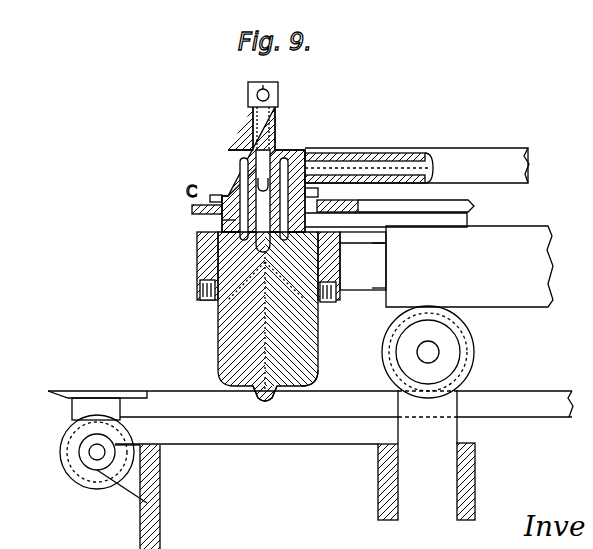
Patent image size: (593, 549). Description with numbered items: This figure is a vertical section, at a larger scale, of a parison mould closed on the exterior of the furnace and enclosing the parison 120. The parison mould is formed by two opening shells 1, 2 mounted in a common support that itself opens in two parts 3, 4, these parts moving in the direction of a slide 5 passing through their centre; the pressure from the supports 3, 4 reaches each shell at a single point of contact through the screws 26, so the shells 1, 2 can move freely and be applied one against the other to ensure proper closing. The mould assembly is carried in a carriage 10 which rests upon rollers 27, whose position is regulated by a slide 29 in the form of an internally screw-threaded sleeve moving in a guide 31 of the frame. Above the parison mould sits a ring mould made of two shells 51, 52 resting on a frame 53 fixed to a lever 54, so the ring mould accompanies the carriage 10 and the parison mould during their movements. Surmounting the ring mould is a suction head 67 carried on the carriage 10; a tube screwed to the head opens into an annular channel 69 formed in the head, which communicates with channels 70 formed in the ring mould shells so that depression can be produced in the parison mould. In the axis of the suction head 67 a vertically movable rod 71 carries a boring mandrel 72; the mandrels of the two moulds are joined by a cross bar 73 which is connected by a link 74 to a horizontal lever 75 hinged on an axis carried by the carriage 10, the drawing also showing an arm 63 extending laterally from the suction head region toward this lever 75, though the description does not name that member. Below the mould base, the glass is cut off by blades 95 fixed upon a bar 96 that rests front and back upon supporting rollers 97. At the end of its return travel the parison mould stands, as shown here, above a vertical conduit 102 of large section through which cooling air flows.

The opening shell 1 is at (228, 376).
The opening shell 2 is at (303, 375).
The support part 3 is at (200, 259).
The support part 4 is at (328, 256).
The slide 5 is at (363, 261).
The carriage 10 is at (462, 266).
The screws 26 is at (201, 294).
The rollers 27 is at (428, 375).
The slide 29 is at (407, 482).
The guide 31 is at (466, 476).
The ring mould shell 51 is at (210, 198).
The ring mould shell 52 is at (320, 199).
The frame 53 is at (192, 210).
The lever 54 is at (465, 207).
The arm 63 is at (398, 148).
The suction head 67 is at (236, 150).
The annular channel 69 is at (241, 162).
The channels 70 is at (224, 228).
The rod 71 is at (262, 116).
The boring mandrel 72 is at (260, 183).
The cross bar 73 is at (263, 82).
The link 74 is at (277, 119).
The horizontal lever 75 is at (508, 165).
The blades 95 is at (61, 392).
The bar 96 is at (310, 417).
The supporting rollers 97 is at (70, 453).
The vertical conduit 102 is at (222, 497).
The parison 120 is at (268, 338).